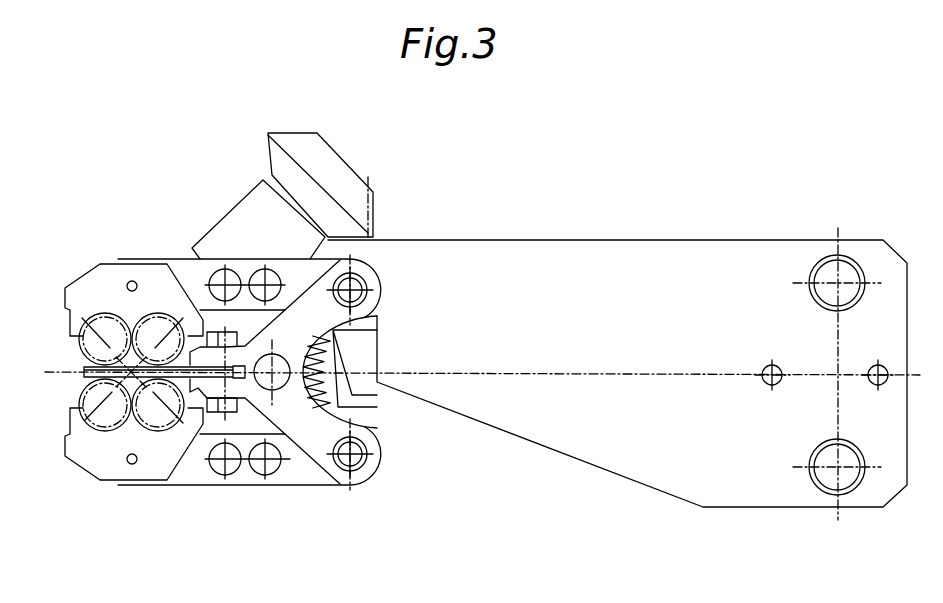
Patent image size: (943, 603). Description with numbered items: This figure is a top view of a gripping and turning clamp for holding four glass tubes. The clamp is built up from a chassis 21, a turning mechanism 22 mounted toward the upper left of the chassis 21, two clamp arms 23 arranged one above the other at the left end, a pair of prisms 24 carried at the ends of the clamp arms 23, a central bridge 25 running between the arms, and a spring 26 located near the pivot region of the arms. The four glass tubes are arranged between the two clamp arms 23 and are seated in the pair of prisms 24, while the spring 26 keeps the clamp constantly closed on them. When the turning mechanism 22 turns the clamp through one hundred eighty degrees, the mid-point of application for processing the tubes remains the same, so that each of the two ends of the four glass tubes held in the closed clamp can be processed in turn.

The chassis 21 is at (608, 290).
The turning mechanism 22 is at (327, 208).
The clamp arms 23 is at (190, 278).
The pair of prisms 24 is at (102, 298).
The central bridge 25 is at (190, 403).
The spring 26 is at (333, 345).